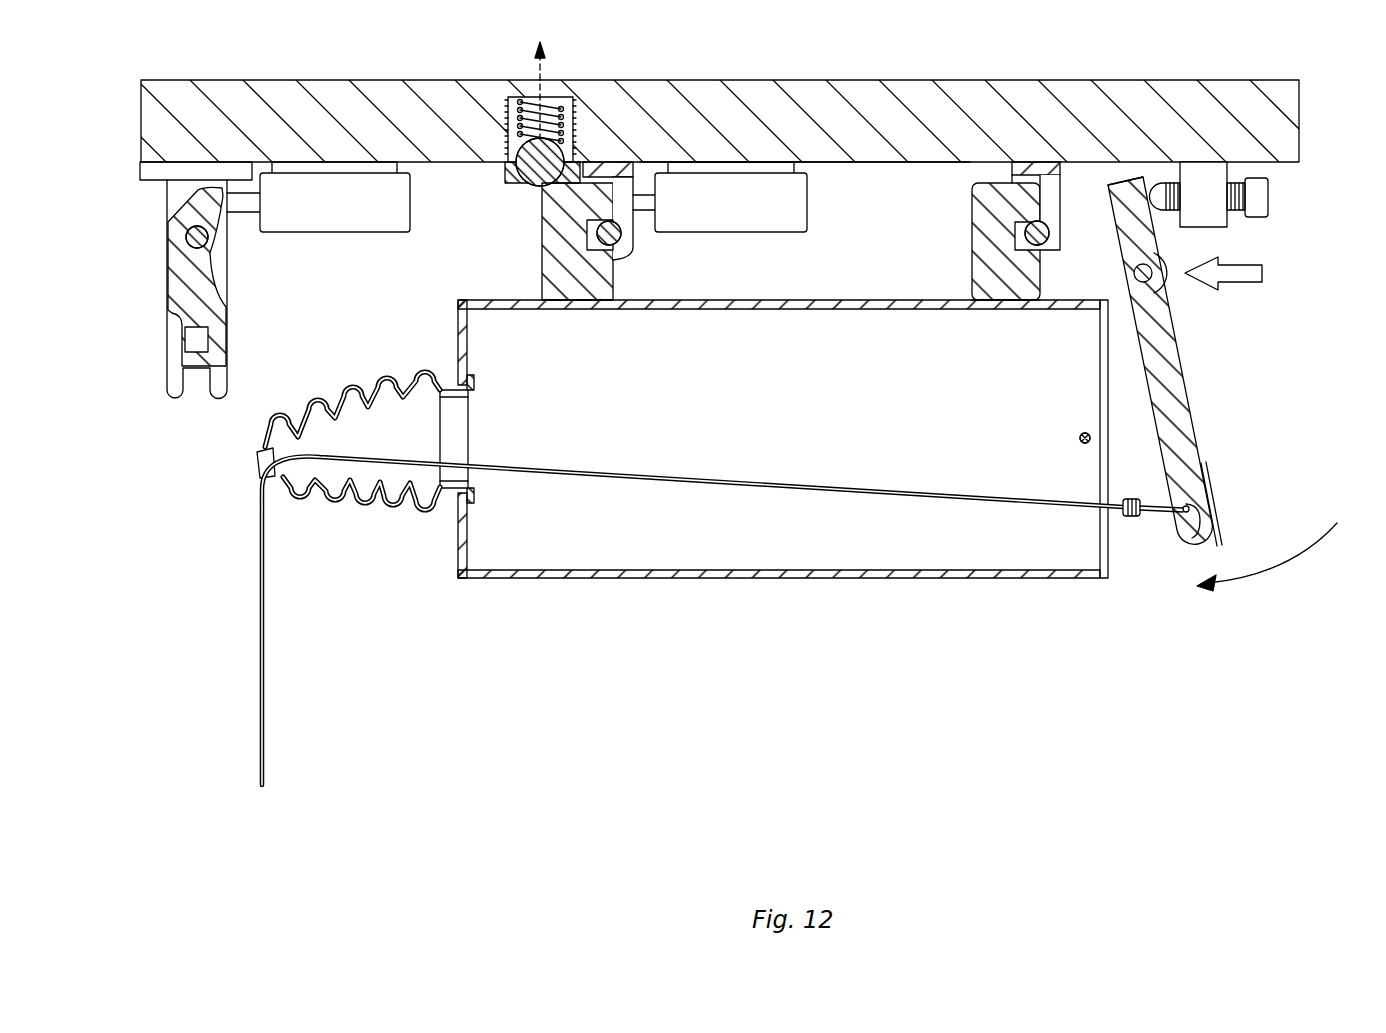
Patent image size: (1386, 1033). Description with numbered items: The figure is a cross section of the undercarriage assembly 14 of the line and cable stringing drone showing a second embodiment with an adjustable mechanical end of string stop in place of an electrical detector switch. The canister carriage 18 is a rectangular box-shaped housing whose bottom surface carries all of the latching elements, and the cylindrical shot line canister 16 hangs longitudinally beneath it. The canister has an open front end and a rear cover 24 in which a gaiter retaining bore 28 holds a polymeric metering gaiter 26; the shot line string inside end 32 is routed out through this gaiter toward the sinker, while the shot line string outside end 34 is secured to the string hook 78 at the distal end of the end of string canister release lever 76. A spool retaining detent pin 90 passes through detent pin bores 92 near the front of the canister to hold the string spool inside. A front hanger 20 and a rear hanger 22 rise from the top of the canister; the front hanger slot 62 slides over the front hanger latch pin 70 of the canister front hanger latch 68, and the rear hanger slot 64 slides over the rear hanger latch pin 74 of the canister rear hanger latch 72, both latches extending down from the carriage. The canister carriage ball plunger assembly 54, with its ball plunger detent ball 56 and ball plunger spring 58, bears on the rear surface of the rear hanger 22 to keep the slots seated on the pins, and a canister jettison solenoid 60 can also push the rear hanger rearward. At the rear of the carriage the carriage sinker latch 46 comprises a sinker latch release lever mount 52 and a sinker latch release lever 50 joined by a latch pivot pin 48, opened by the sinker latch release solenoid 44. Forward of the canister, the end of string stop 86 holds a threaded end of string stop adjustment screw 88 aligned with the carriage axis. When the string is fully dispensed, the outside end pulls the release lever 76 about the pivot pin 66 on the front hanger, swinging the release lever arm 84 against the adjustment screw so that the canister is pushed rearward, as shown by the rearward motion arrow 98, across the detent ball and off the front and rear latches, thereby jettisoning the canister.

The undercarriage assembly 14 is at (1300, 102).
The shot line canister 16 is at (680, 580).
The canister carriage 18 is at (830, 165).
The front hanger 20 is at (990, 290).
The rear hanger 22 is at (543, 282).
The rear cover 24 is at (458, 320).
The polymeric metering gaiter 26 is at (326, 500).
The gaiter retaining bore 28 is at (465, 395).
The shot line string inside end 32 is at (265, 678).
The shot line string outside end 34 is at (1125, 518).
The sinker latch release solenoid 44 is at (328, 232).
The carriage sinker latch 46 is at (152, 182).
The latch pivot pin 48 is at (190, 238).
The sinker latch release lever 50 is at (195, 290).
The sinker latch release lever mount 52 is at (172, 340).
The canister carriage ball plunger assembly 54 is at (510, 172).
The ball plunger detent ball 56 is at (525, 180).
The ball plunger spring 58 is at (548, 128).
The canister jettison solenoid 60 is at (730, 232).
The front hanger slot 62 is at (1005, 235).
The rear hanger slot 64 is at (590, 240).
The pivot pin 66 is at (1150, 278).
The canister front hanger latch 68 is at (1060, 240).
The front hanger latch pin 70 is at (1030, 228).
The canister rear hanger latch 72 is at (627, 243).
The rear hanger latch pin 74 is at (595, 233).
The end of string canister release lever 76 is at (1183, 368).
The string hook 78 is at (1200, 522).
The release lever arm 84 is at (1125, 222).
The end of string stop 86 is at (1213, 218).
The end of string stop adjustment screw 88 is at (1268, 195).
The shot line canister spool retaining detent pin 90 is at (1082, 443).
The detent pin bores 92 is at (1080, 436).
The rearward motion arrow 98 is at (1262, 273).